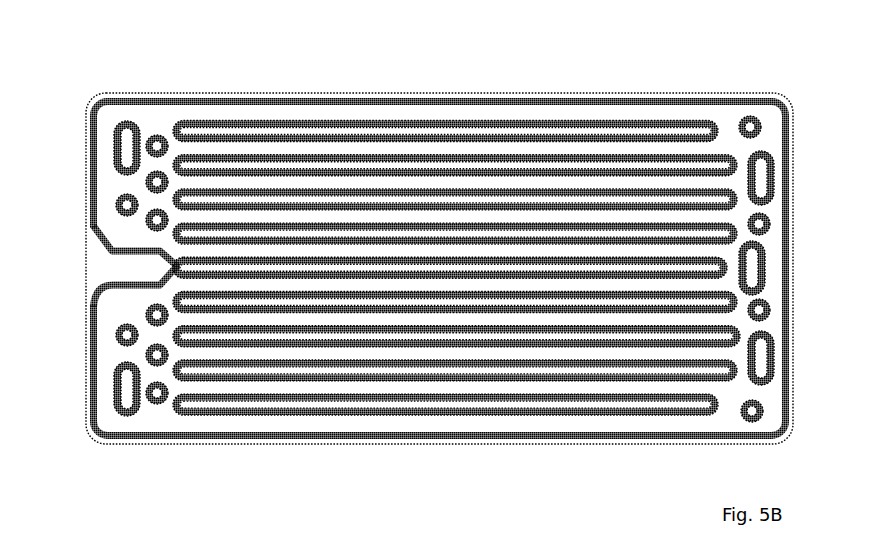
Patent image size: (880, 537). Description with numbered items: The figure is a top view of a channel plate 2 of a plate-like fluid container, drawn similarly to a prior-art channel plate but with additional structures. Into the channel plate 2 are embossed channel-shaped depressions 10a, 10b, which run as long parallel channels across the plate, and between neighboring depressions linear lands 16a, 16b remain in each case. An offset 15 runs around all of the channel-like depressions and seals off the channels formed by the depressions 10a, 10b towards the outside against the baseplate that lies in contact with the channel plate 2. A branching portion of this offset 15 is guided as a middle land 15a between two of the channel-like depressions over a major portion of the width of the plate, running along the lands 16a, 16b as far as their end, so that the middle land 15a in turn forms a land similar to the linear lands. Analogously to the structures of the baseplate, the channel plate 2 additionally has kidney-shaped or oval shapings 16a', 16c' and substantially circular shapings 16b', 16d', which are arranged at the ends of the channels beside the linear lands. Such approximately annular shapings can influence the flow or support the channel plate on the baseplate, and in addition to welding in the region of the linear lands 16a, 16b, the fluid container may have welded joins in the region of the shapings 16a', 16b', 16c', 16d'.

The channel plate 2 is at (627, 442).
The offset 15 is at (615, 102).
The middle land 15a is at (178, 268).
The channel-shaped depression 10a is at (463, 150).
The channel-shaped depression 10b is at (372, 187).
The land 16a is at (445, 221).
The land 16b is at (456, 200).
The kidney-shaped or oval shaping 16a' is at (115, 228).
The substantially circular shaping 16b' is at (145, 227).
The kidney-shaped or oval shaping 16c' is at (787, 268).
The substantially circular shaping 16d' is at (792, 269).